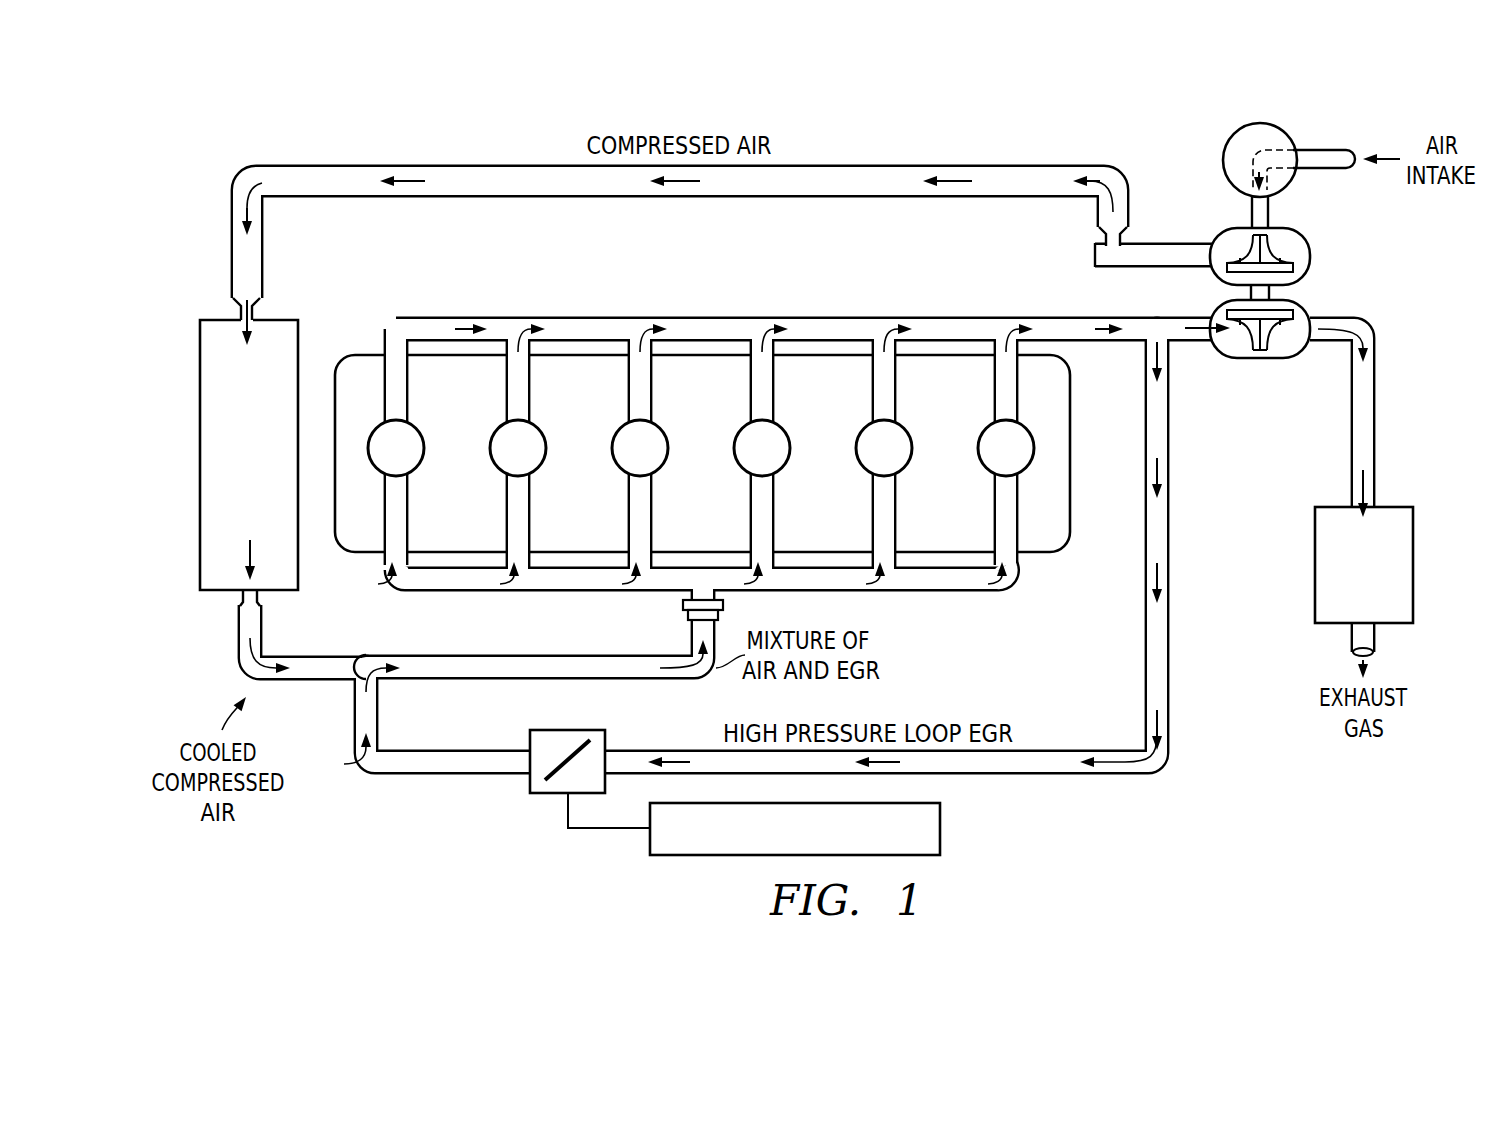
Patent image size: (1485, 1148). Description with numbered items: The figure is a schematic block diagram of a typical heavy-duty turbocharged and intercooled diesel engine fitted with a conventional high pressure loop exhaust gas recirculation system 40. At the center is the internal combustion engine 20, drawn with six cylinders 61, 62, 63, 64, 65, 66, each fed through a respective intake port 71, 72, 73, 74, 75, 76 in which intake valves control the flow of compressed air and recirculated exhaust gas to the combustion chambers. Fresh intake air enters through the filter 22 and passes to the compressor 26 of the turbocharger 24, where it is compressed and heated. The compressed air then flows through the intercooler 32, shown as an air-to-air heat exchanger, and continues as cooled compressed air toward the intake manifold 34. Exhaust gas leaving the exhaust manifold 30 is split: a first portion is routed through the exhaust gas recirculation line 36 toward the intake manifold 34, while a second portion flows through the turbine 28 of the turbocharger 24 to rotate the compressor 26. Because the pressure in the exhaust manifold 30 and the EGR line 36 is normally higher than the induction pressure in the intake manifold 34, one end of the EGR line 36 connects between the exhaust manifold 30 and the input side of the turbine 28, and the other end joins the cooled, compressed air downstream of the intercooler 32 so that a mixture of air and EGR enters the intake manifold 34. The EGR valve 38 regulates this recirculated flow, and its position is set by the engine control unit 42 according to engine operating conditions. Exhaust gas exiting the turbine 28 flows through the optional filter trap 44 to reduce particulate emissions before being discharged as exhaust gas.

The internal combustion engine 20 is at (1078, 450).
The filter 22 is at (1222, 160).
The turbocharger 24 is at (1292, 297).
The compressor 26 is at (1302, 228).
The turbine 28 is at (1280, 356).
The exhaust manifold 30 is at (977, 318).
The intercooler 32 is at (214, 320).
The intake manifold 34 is at (1000, 590).
The exhaust gas recirculation line 36 is at (1170, 545).
The EGR valve 38 is at (528, 787).
The exhaust gas recirculation system 40 is at (1196, 725).
The engine control unit 42 is at (941, 826).
The filter trap 44 is at (1414, 558).
The cylinder 61 is at (413, 428).
The cylinder 62 is at (535, 428).
The cylinder 63 is at (657, 428).
The cylinder 64 is at (779, 428).
The cylinder 65 is at (901, 428).
The cylinder 66 is at (1025, 430).
The intake port 71 is at (407, 522).
The intake port 72 is at (529, 522).
The intake port 73 is at (651, 522).
The intake port 74 is at (773, 522).
The intake port 75 is at (895, 505).
The intake port 76 is at (996, 520).